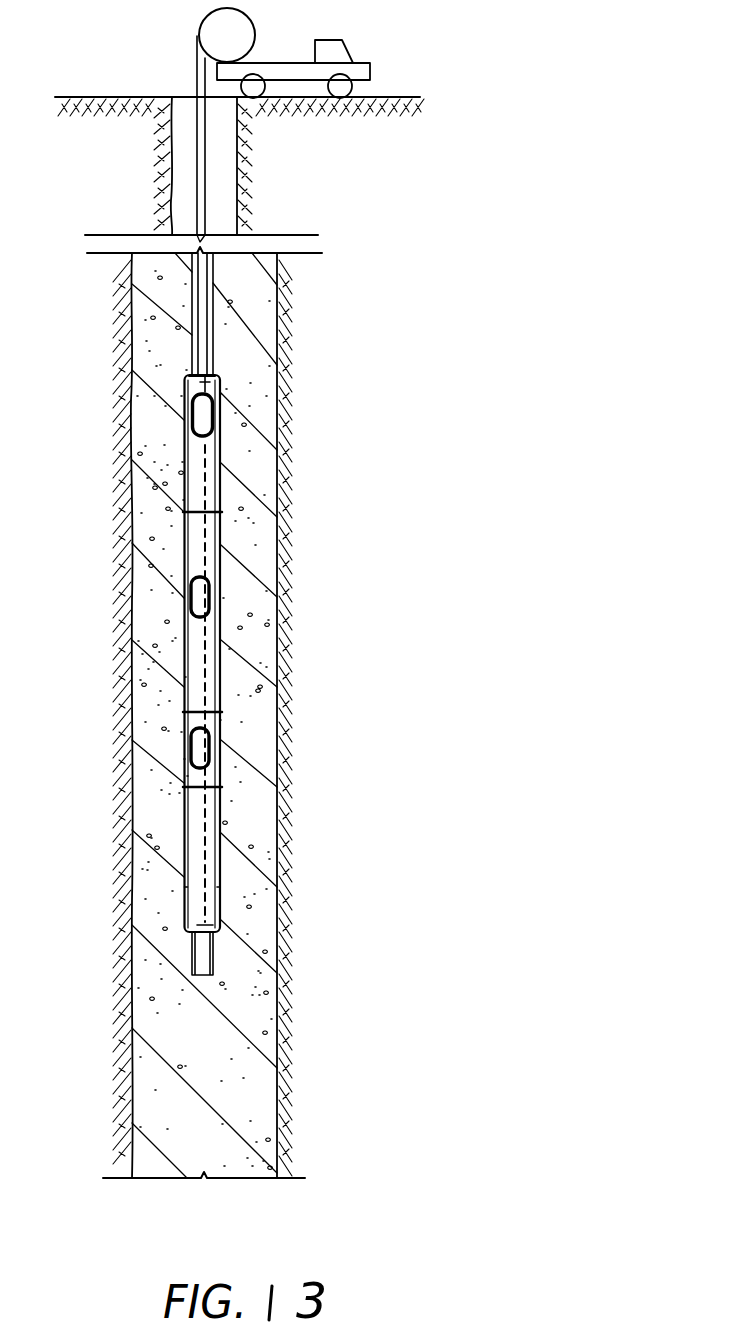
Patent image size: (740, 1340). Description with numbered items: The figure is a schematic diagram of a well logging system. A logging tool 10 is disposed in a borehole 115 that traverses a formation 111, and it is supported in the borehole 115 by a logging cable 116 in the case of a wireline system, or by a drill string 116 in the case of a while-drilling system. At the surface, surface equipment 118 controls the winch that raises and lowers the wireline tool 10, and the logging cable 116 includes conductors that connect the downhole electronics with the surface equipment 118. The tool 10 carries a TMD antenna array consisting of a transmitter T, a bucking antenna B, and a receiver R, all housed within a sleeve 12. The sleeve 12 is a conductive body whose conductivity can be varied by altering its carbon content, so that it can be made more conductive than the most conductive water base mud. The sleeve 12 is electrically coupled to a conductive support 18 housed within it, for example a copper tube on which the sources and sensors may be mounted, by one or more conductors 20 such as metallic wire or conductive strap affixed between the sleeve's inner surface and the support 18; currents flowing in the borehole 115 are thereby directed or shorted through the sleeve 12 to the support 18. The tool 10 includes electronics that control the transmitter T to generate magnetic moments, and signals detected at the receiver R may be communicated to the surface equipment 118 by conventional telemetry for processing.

The surface equipment 118 is at (277, 40).
The logging cable 116 is at (207, 171).
The formation 111 is at (273, 336).
The borehole 115 is at (229, 1044).
The logging tool 10 is at (221, 672).
The sleeve 12 is at (222, 405).
The transmitter T is at (212, 418).
The bucking antenna B is at (208, 595).
The receiver R is at (212, 748).
The conductors 20 is at (247, 512).
The conductive support 18 is at (218, 950).